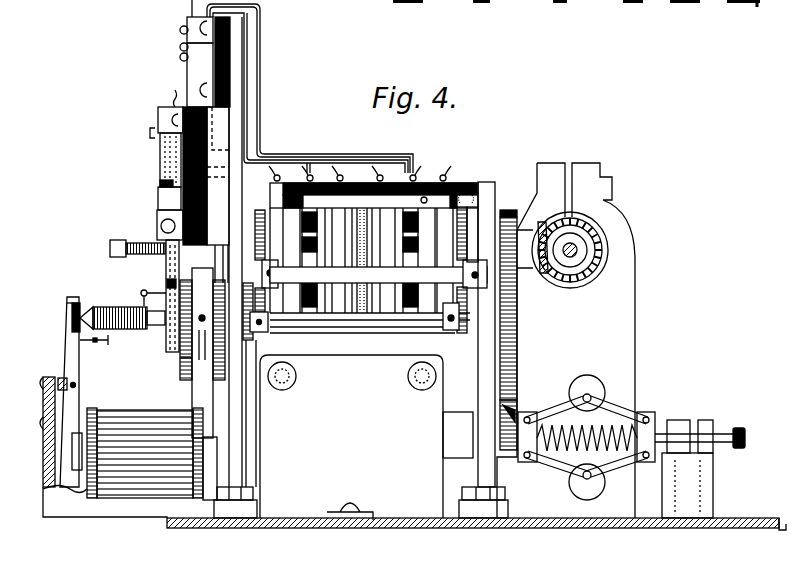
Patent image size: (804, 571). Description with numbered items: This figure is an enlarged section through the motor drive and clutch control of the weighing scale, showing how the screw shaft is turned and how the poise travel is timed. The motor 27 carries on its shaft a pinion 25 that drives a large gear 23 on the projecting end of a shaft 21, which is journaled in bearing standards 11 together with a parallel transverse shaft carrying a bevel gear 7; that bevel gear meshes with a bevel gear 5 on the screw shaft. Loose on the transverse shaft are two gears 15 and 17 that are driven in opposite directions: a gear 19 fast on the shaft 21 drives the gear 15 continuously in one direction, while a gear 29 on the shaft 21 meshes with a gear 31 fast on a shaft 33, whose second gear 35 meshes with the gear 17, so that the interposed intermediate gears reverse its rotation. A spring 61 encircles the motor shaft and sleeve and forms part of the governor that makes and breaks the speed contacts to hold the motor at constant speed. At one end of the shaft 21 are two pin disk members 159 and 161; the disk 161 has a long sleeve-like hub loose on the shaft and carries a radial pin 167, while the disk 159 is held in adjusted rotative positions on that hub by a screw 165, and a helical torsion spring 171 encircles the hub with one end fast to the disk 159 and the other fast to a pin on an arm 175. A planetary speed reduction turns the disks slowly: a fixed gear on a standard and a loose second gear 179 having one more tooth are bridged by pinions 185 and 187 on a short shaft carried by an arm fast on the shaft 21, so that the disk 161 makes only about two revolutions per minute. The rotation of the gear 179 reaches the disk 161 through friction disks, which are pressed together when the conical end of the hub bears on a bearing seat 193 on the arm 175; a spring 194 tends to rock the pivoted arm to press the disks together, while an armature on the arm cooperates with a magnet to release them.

The bevel gear 5 is at (562, 235).
The bevel gear 7 is at (544, 272).
The standards 11 is at (238, 425).
The gear 15 is at (465, 222).
The gear 17 is at (255, 222).
The gear 19 is at (458, 322).
The shaft 21 is at (369, 314).
The large gear 23 is at (517, 357).
The pinion 25 is at (513, 413).
The motor 27 is at (298, 505).
The gear 29 is at (253, 342).
The gear 31 is at (275, 288).
The shaft 33 is at (397, 272).
The second gear 35 is at (280, 290).
The spring 61 is at (600, 428).
The disk member 159 is at (168, 344).
The disk member 161 is at (180, 375).
The screw 165 is at (158, 323).
The pin 167 is at (168, 280).
The helical torsion spring 171 is at (117, 306).
The arm 175 is at (70, 350).
The second gear 179 is at (176, 295).
The pinion 185 is at (208, 425).
The pinion 187 is at (190, 409).
The bearing seat 193 is at (83, 303).
The spring 194 is at (80, 338).